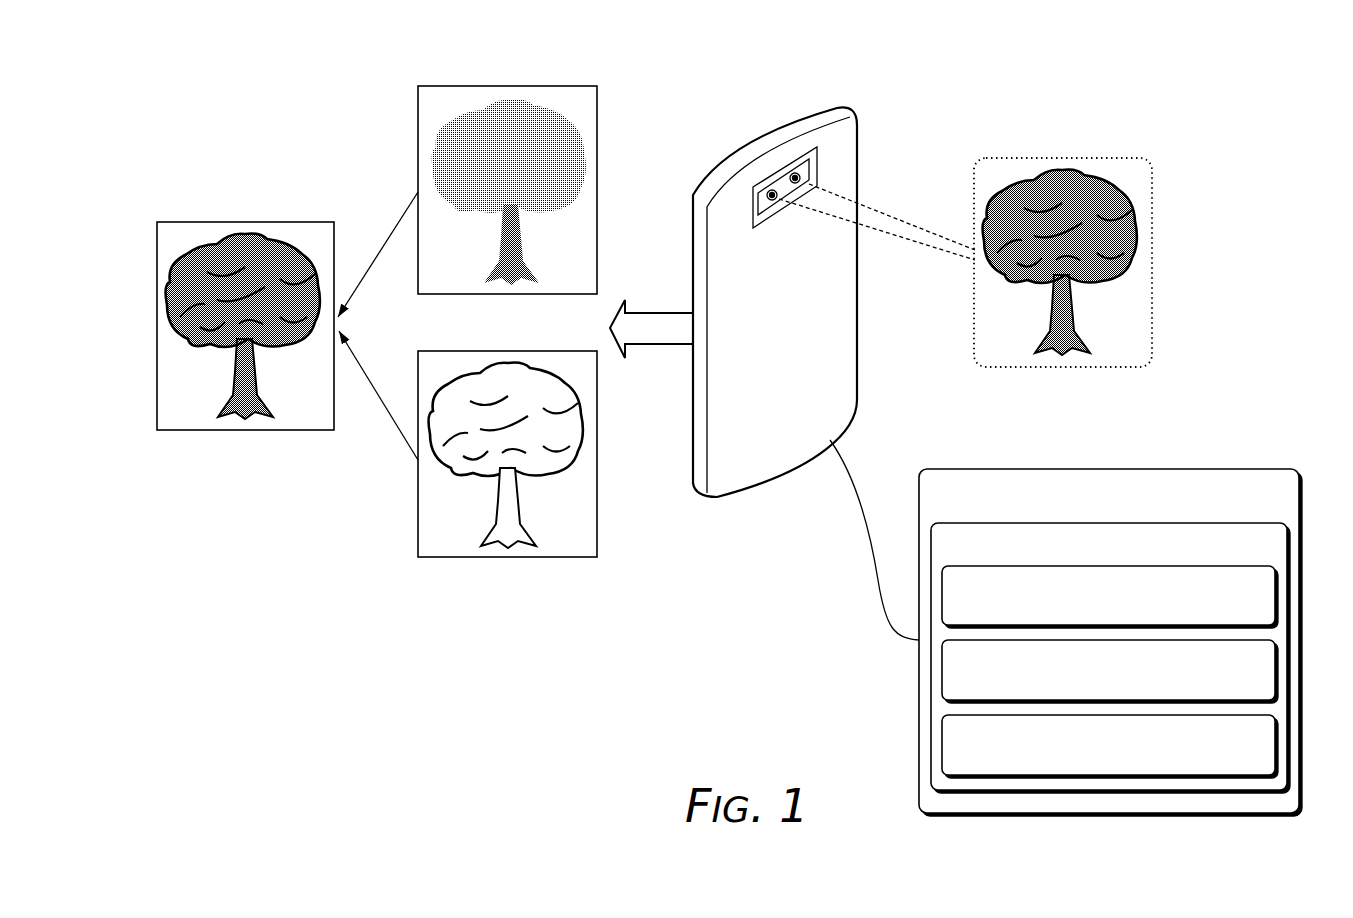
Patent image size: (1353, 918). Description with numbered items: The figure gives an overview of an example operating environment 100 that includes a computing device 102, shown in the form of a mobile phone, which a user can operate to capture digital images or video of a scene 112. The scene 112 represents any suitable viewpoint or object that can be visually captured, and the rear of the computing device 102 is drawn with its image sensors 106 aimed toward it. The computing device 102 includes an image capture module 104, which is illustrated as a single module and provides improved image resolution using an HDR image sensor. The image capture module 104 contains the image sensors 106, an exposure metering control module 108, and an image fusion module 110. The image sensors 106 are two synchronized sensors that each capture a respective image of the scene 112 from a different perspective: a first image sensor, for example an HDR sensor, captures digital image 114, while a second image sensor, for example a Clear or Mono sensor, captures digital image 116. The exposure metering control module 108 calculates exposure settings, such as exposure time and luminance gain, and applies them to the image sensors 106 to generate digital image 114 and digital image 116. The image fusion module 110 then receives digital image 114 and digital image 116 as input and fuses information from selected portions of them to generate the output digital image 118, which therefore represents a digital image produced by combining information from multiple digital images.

The operating environment 100 is at (1201, 95).
The computing device 102 is at (838, 110).
The image capture module 104 is at (1272, 549).
The image sensors 106 is at (780, 171).
The exposure metering control module 108 is at (1268, 681).
The image fusion module 110 is at (1268, 756).
The scene 112 is at (1063, 158).
The digital image 114 is at (510, 86).
The digital image 116 is at (510, 351).
The output digital image 118 is at (250, 222).